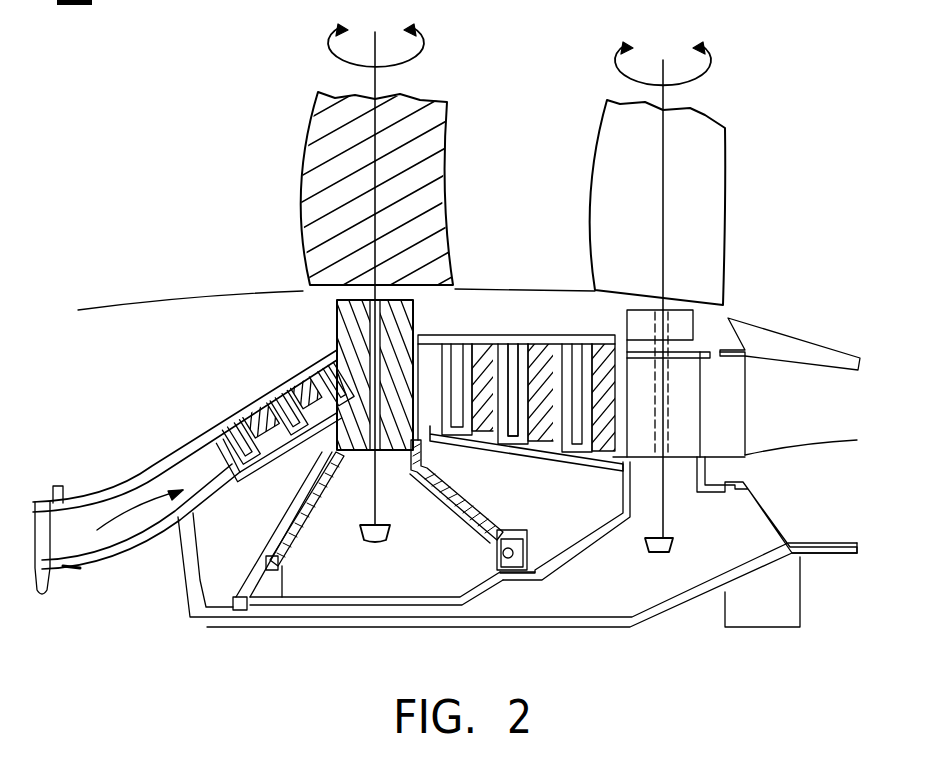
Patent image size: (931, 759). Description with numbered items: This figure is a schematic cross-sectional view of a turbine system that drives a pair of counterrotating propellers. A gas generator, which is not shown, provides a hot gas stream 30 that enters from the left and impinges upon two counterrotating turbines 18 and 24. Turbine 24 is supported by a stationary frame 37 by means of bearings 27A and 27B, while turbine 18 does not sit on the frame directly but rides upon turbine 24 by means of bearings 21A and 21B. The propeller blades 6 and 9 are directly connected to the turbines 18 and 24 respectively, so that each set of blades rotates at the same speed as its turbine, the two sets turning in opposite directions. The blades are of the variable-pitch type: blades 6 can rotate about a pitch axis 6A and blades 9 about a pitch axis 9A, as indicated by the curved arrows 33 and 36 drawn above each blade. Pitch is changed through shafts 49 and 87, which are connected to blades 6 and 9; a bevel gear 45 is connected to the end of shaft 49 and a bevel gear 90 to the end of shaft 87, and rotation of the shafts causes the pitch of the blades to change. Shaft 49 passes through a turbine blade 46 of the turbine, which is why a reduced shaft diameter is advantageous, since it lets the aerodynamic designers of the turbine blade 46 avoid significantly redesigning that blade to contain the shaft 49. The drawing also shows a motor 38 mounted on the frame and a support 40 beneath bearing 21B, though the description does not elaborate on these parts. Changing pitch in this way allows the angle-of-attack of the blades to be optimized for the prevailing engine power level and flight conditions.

The blades 6 is at (450, 142).
The pitch axis 6A is at (378, 76).
The blades 9 is at (724, 196).
The pitch axis 9A is at (666, 102).
The turbine 18 is at (530, 337).
The bearing 21A is at (279, 566).
The bearing 21B is at (540, 505).
The turbine 24 is at (572, 340).
The bearing 27A is at (240, 611).
The bearing 27B is at (746, 482).
The hot gas stream 30 is at (133, 517).
The arrow 33 is at (426, 40).
The arrow 36 is at (615, 53).
The stationary frame 37 is at (625, 628).
The motor 38 is at (775, 628).
The bearing support 40 is at (500, 573).
The bevel gear 45 is at (375, 542).
The turbine blade 46 is at (336, 325).
The shaft 49 is at (378, 502).
The shaft 87 is at (666, 502).
The bevel gear 90 is at (675, 545).